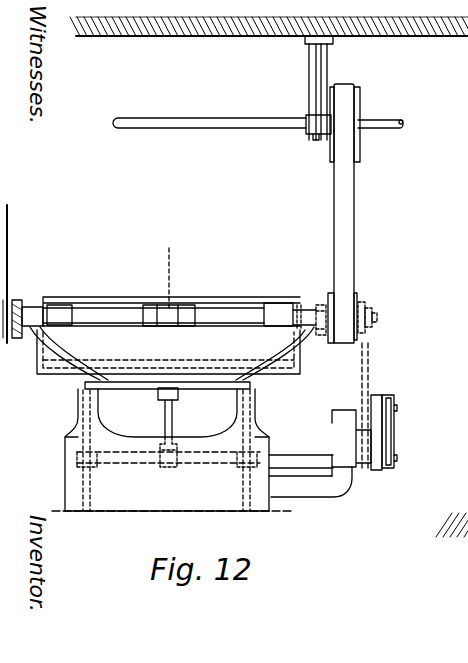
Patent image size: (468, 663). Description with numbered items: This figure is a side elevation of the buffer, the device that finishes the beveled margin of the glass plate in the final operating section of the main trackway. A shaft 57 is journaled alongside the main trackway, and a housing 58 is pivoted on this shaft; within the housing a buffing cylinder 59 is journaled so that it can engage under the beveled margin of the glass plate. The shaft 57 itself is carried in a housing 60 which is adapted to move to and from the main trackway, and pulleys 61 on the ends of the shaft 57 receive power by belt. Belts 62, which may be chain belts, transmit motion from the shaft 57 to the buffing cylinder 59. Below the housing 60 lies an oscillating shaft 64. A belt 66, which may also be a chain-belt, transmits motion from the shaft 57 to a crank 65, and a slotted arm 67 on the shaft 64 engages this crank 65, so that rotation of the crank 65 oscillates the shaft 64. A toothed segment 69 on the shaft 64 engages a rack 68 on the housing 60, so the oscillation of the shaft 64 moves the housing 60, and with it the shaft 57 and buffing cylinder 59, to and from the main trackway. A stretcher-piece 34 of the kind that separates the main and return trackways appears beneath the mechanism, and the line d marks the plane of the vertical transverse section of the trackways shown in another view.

The stretcher-piece 34 is at (183, 494).
The shaft 57 is at (213, 300).
The housing 58 is at (27, 315).
The buffing cylinder 59 is at (298, 311).
The housing 60 is at (163, 383).
The pulleys 61 is at (362, 301).
The belts 62 is at (322, 304).
The oscillating shaft 64 is at (290, 455).
The crank 65 is at (394, 407).
The belt 66 is at (367, 353).
The slotted arm 67 is at (392, 433).
The rack 68 is at (157, 392).
The toothed segment 69 is at (166, 413).
The line d is at (167, 270).